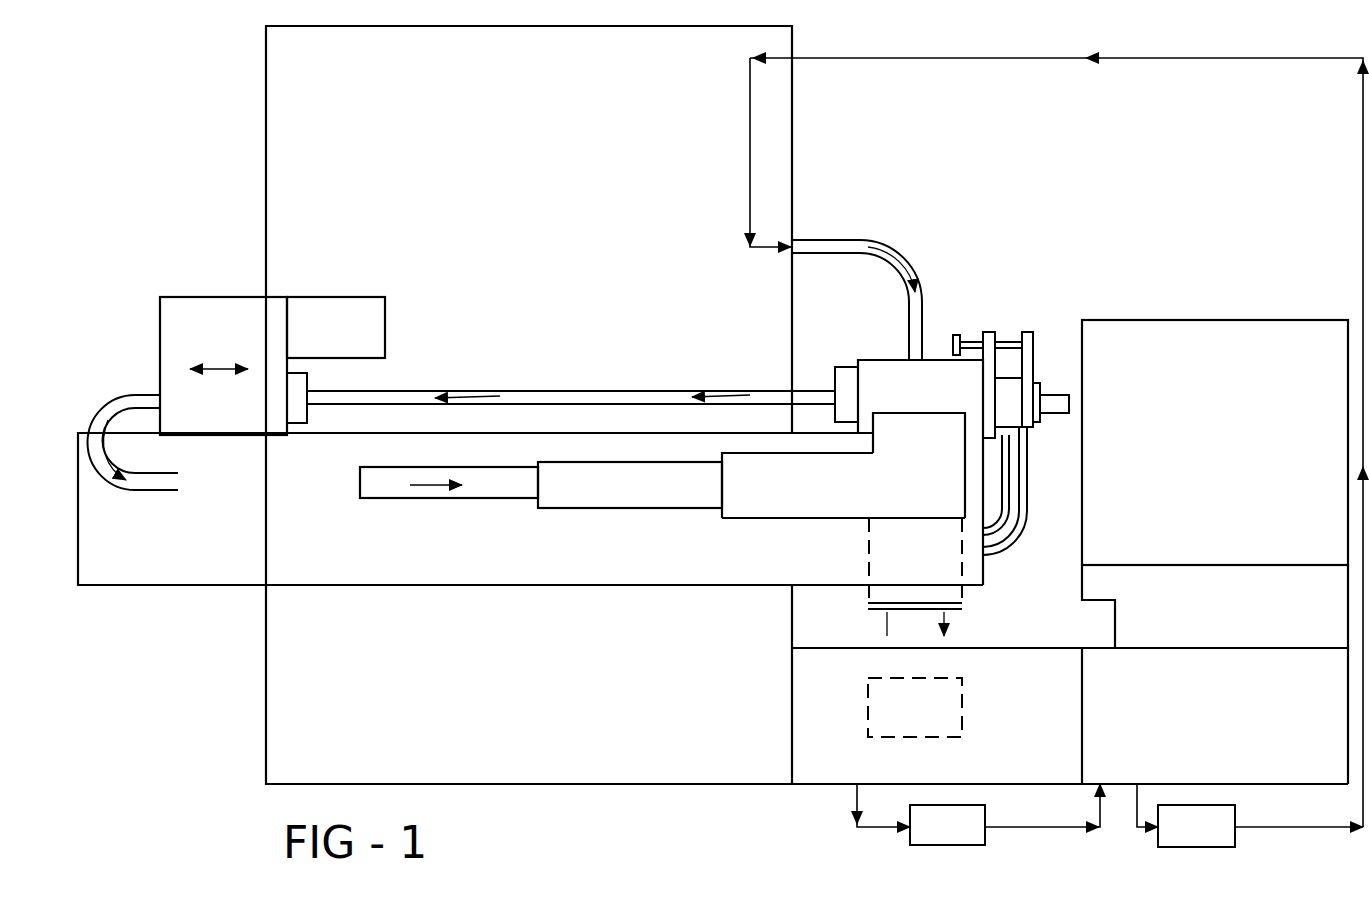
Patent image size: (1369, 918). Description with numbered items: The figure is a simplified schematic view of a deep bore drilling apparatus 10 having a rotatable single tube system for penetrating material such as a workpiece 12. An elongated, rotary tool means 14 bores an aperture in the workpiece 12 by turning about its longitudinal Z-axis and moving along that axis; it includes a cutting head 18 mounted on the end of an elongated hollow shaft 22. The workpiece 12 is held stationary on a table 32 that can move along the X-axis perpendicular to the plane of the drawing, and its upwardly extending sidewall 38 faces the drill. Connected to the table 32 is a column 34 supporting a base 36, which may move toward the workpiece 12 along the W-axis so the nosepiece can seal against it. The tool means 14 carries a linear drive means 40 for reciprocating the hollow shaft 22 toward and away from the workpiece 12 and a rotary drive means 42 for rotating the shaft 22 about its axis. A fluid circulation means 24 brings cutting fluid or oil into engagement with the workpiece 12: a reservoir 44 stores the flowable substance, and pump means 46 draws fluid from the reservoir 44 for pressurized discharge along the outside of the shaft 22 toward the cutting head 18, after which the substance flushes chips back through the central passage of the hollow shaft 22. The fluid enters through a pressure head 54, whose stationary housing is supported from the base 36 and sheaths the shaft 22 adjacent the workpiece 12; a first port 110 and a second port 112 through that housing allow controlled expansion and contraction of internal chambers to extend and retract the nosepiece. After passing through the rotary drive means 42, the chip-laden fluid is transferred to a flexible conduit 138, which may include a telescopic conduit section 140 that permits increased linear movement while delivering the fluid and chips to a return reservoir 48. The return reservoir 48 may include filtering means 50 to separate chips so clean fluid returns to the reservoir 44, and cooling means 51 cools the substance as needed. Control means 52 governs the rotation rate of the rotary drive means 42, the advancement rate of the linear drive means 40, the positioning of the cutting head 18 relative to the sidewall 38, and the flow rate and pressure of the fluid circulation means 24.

The deep bore drilling apparatus 10 is at (993, 278).
The workpiece 12 is at (1207, 320).
The elongated rotary tool means 14 is at (627, 391).
The cutting head 18 is at (1053, 392).
The elongated hollow shaft 22 is at (532, 391).
The fluid circulation means 24 is at (862, 240).
The table 32 is at (1115, 620).
The column 34 is at (266, 705).
The base 36 is at (143, 587).
The sidewall 38 is at (1083, 514).
The linear drive means 40 is at (183, 297).
The rotary drive means 42 is at (312, 297).
The reservoir 44 is at (1275, 784).
The pump means 46 is at (1158, 843).
The return reservoir 48 is at (823, 784).
The filtering means 50 is at (910, 835).
The cooling means 51 is at (918, 737).
The control means 52 is at (266, 115).
The pressure head 54 is at (882, 367).
The first port 110 is at (1002, 438).
The second port 112 is at (987, 449).
The flexible conduit 138 is at (122, 393).
The telescopic conduit section 140 is at (575, 508).